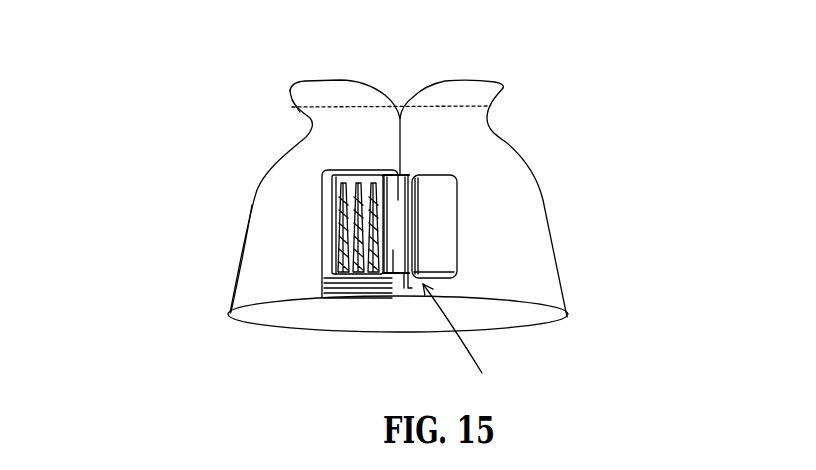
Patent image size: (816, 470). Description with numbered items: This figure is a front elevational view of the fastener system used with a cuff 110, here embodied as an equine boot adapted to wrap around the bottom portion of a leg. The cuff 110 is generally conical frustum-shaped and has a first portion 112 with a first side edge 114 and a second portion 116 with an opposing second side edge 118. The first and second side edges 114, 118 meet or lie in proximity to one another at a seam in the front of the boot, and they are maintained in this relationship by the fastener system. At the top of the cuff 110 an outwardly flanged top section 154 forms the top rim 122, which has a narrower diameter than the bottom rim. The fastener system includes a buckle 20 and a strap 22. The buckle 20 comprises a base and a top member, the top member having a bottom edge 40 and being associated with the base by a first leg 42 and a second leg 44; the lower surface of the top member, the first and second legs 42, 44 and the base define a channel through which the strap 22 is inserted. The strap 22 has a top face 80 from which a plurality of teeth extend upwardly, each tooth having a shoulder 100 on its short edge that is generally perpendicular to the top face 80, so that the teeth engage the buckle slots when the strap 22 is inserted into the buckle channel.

The buckle 20 is at (373, 239).
The strap 22 is at (492, 187).
The bottom edge 40 is at (321, 250).
The first leg 42 is at (353, 168).
The second leg 44 is at (349, 268).
The top face 80 is at (393, 252).
The shoulder 100 is at (322, 177).
The cuff 110 is at (259, 176).
The first portion 112 is at (306, 210).
The first side edge 114 is at (390, 143).
The second portion 116 is at (430, 192).
The second side edge 118 is at (418, 142).
The top rim 122 is at (327, 83).
The outwardly flanged top section 154 is at (289, 106).